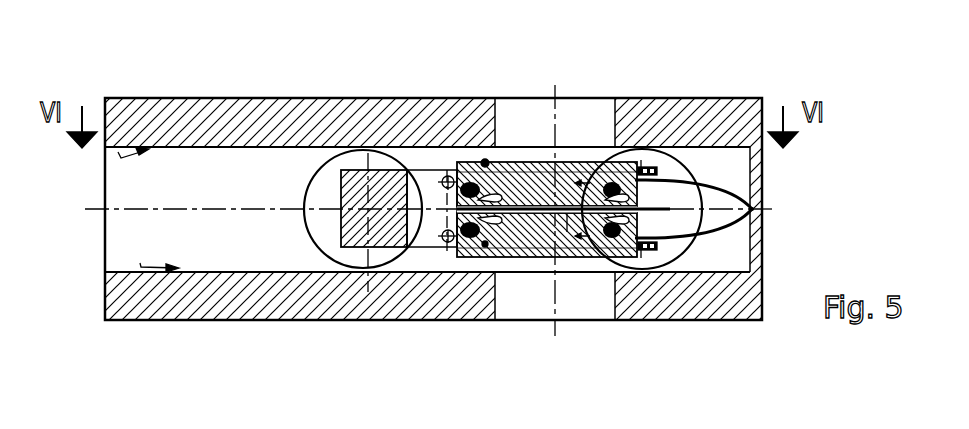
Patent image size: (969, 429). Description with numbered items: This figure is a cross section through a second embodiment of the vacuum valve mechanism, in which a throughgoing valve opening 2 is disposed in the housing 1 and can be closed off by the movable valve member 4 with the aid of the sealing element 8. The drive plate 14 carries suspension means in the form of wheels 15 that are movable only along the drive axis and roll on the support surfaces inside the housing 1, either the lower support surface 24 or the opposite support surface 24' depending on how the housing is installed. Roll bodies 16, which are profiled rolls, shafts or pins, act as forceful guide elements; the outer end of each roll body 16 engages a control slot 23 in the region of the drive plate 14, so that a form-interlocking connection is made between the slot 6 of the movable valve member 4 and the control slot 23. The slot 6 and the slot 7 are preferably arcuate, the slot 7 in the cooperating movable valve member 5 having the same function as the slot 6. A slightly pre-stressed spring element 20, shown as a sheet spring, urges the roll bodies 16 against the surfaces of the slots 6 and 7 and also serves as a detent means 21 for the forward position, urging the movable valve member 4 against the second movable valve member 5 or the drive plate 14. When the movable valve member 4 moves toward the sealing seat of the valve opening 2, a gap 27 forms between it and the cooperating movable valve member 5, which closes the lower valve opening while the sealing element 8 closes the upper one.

The housing 1 is at (198, 117).
The valve opening 2 is at (586, 117).
The movable valve member 4 is at (523, 177).
The cooperating movable valve member 5 is at (524, 234).
The slot 6 is at (485, 163).
The slot 7 is at (484, 248).
The sealing element 8 is at (632, 141).
The drive plate 14 is at (358, 187).
The wheels 15 is at (328, 172).
The roll bodies 16 is at (452, 244).
The spring element 20 is at (710, 238).
The detent means 21 is at (756, 209).
The control slot 23 is at (449, 243).
The support surface 24 is at (150, 334).
The support surface 24' is at (120, 87).
The gap 27 is at (572, 258).